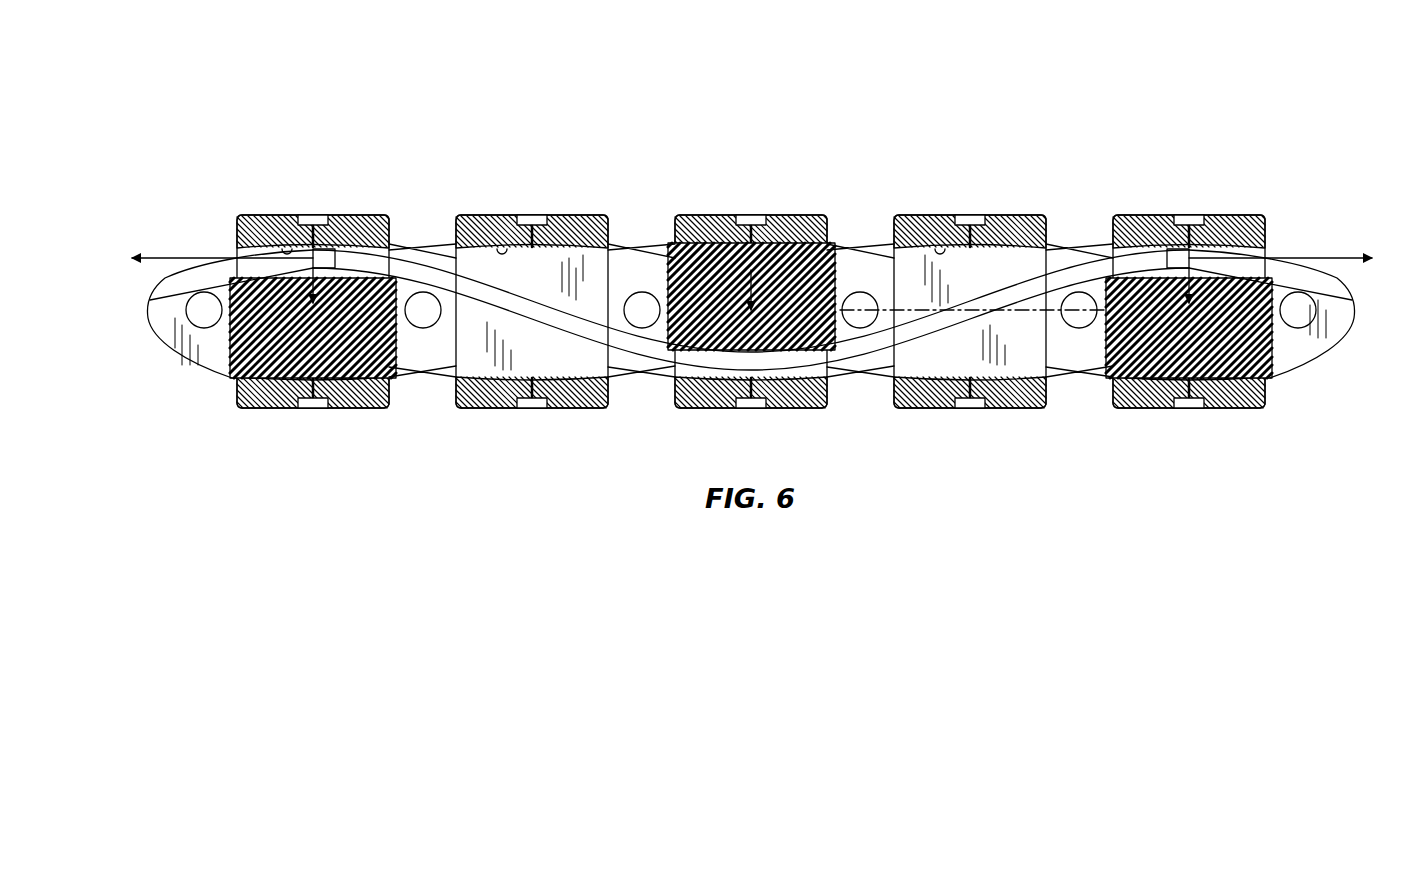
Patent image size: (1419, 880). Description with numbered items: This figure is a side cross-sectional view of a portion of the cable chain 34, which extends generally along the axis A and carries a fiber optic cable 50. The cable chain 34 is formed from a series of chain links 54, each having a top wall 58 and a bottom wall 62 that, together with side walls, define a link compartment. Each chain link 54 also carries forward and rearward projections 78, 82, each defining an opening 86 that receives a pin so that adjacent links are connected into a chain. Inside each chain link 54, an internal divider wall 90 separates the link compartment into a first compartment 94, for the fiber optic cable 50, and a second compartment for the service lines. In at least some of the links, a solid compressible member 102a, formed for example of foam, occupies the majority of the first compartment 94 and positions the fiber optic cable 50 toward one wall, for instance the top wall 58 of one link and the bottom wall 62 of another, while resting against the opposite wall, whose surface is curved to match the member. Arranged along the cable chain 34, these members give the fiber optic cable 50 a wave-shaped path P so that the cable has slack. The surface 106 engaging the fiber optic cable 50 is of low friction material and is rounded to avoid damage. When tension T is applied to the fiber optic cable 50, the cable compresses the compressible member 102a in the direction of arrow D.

The cable chain 34 is at (750, 262).
The fiber optic cable 50 is at (525, 298).
The chain link 54 is at (750, 305).
The top wall 58 is at (363, 214).
The bottom wall 62 is at (705, 409).
The forward projection 78 is at (432, 247).
The rearward projection 82 is at (410, 372).
The opening 86 is at (207, 322).
The internal divider wall 90 is at (250, 246).
The first compartment 94 is at (287, 246).
The solid compressible member 102a is at (845, 266).
The surface 106 is at (150, 300).
The tension T is at (163, 256).
The arrow D is at (315, 268).
The path P is at (865, 386).
The axis A is at (975, 315).